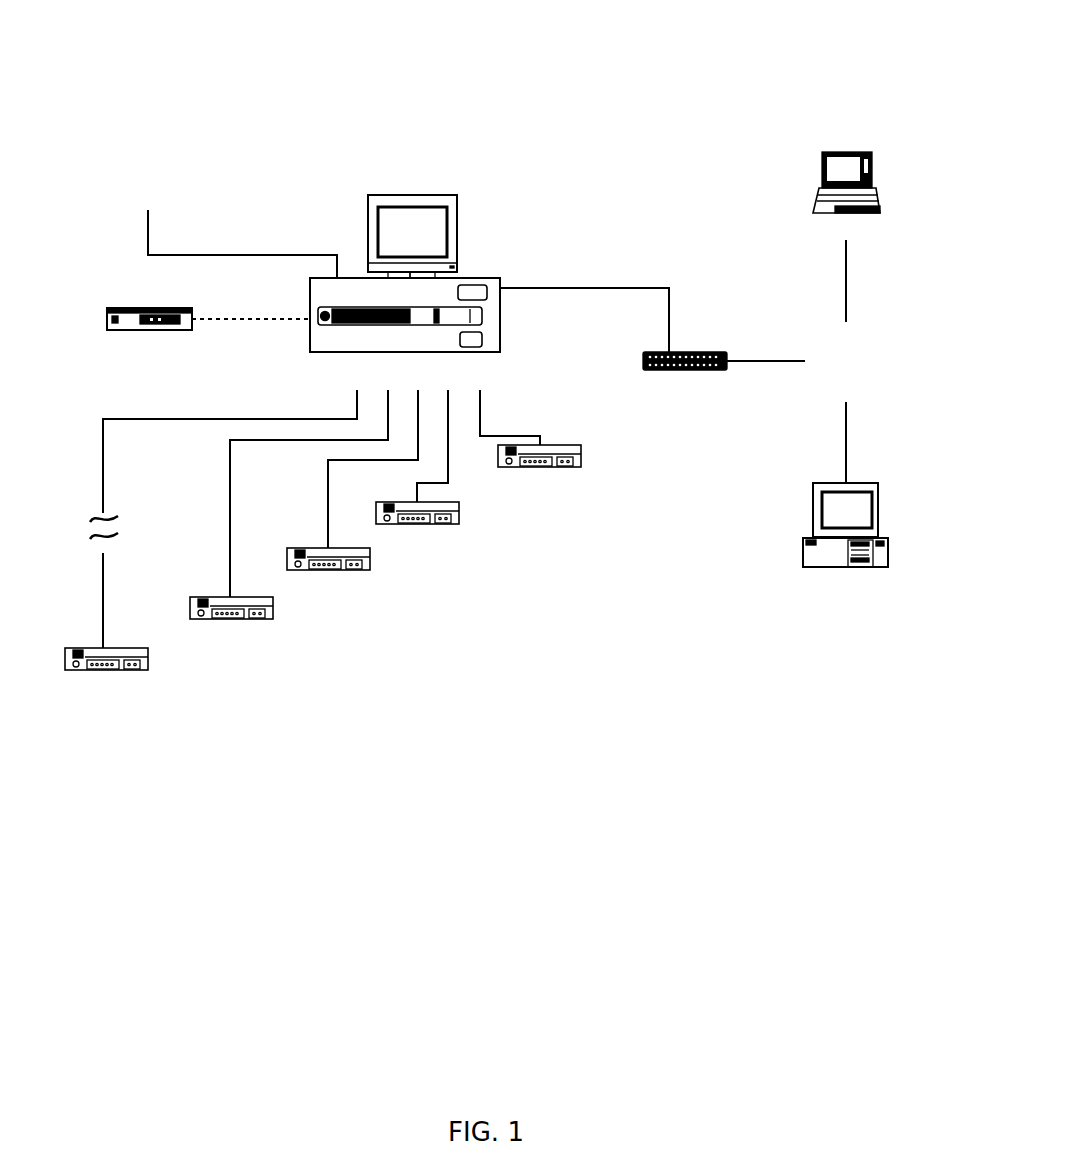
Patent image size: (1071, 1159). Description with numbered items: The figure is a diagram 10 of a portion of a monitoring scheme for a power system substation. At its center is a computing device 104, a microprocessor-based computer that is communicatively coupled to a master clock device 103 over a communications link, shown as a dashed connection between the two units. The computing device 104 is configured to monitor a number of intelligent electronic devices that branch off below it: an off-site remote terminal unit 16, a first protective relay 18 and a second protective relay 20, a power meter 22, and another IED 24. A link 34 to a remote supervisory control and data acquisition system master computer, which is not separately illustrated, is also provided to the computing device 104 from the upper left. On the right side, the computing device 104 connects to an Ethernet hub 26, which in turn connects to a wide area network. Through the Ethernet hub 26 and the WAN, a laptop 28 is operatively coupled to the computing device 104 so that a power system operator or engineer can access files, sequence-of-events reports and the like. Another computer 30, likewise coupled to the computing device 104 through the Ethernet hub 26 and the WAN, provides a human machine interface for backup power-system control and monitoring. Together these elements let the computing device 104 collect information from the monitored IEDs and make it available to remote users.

The diagram 10 is at (730, 28).
The master clock device 103 is at (107, 317).
The computing device 104 is at (368, 197).
The link 34 is at (282, 256).
The Ethernet hub 26 is at (643, 358).
The laptop 28 is at (843, 152).
The computer 30 is at (805, 545).
The off-site remote terminal unit 16 is at (148, 655).
The first protective relay 18 is at (190, 600).
The second protective relay 20 is at (292, 548).
The power meter 22 is at (459, 513).
The IED 24 is at (581, 455).